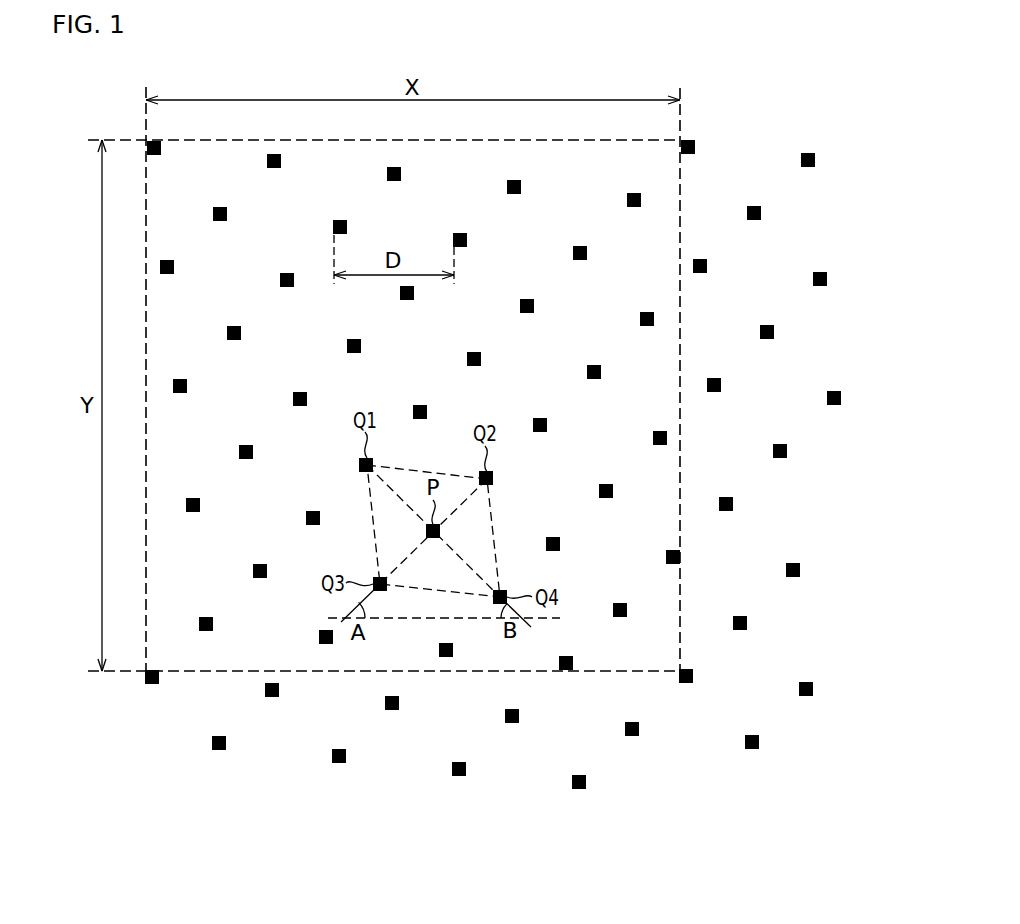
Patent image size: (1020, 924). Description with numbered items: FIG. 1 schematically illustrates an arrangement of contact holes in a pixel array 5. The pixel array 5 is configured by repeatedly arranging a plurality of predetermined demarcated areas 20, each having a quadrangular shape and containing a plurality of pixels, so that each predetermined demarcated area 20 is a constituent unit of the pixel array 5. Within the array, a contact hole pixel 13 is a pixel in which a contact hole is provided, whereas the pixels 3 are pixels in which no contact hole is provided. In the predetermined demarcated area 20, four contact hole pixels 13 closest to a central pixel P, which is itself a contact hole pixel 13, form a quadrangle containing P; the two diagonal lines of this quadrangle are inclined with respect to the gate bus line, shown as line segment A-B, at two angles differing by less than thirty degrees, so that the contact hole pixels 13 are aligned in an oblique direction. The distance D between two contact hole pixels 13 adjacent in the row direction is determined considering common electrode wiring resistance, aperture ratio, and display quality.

The pixel array 5 is at (804, 120).
The predetermined demarcated area 20 is at (680, 318).
The contact hole pixel 13 is at (620, 604).
The pixels in which no contact hole is provided 3 is at (670, 652).